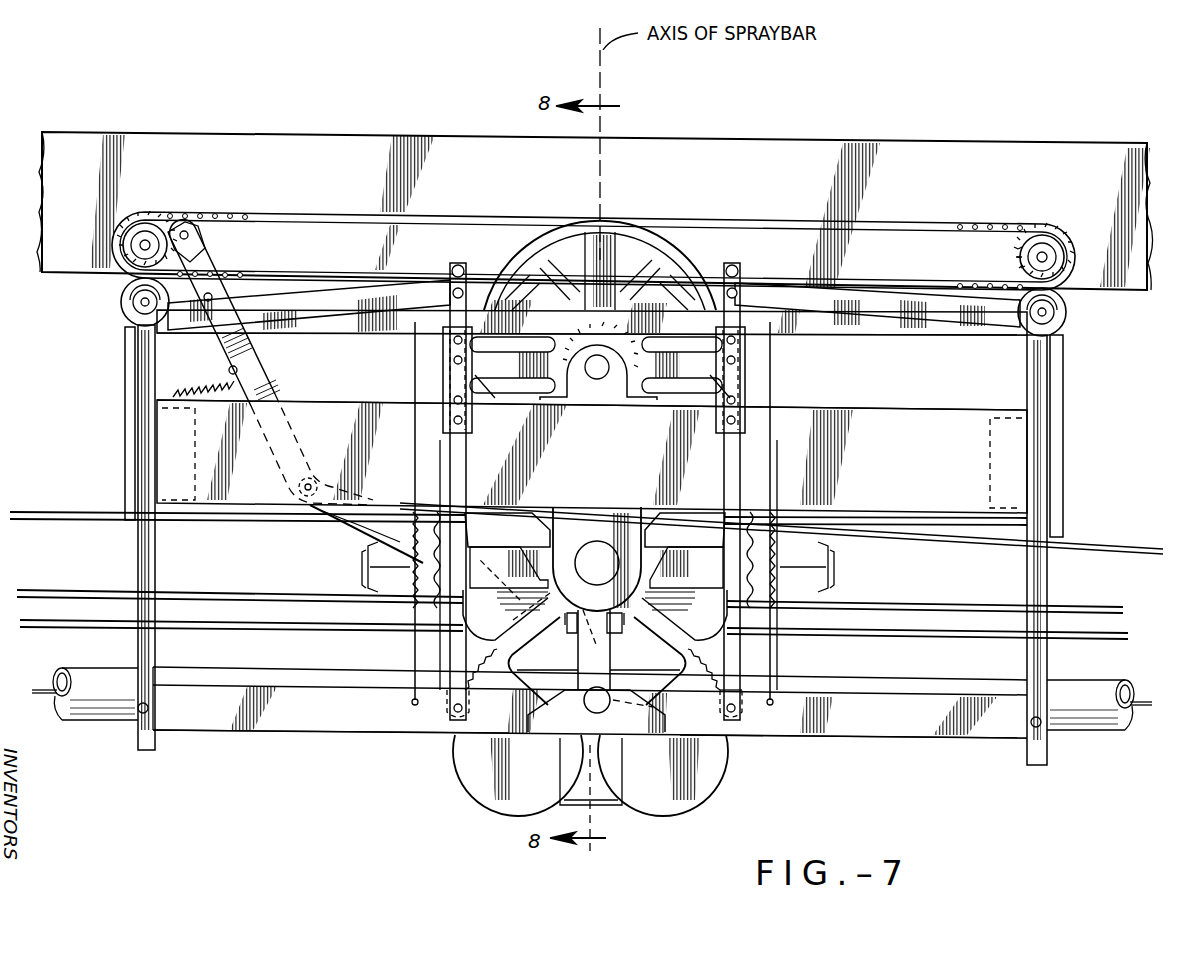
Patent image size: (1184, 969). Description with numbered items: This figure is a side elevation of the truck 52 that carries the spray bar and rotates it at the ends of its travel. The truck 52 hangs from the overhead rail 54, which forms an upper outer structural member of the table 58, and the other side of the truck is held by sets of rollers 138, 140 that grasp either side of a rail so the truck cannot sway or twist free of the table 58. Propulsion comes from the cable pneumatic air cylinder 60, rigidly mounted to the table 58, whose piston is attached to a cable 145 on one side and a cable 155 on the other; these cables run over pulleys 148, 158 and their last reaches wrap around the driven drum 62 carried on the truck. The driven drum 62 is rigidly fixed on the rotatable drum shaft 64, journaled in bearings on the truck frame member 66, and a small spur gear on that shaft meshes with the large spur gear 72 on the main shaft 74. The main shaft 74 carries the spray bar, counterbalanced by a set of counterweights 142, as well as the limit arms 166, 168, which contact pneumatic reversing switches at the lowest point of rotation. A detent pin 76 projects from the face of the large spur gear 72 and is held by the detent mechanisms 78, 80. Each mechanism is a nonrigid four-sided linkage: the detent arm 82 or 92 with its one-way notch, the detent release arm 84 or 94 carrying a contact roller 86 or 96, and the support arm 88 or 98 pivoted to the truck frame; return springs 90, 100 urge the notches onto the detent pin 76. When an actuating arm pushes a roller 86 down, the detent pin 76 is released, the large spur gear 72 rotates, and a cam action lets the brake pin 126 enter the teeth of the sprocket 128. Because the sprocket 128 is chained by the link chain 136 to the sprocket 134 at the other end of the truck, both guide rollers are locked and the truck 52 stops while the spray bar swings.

The truck 52 is at (1072, 378).
The overhead rail 54 is at (1140, 275).
The table 58 is at (985, 132).
The cable pneumatic air cylinder 60 is at (887, 684).
The driven drum 62 is at (685, 252).
The rotatable drum shaft 64 is at (612, 368).
The truck frame member 66 is at (865, 425).
The large spur gear 72 is at (780, 610).
The main shaft 74 is at (600, 548).
The detent pin 76 is at (606, 692).
The detent mechanism 78 is at (748, 736).
The detent mechanism 80 is at (436, 734).
The detent arm 82 is at (838, 732).
The detent release arm 84 is at (770, 648).
The contact roller 86 is at (738, 270).
The support arm 88 is at (882, 312).
The return spring 90 is at (778, 580).
The detent arm 92 is at (355, 722).
The detent release arm 94 is at (440, 645).
The contact roller 96 is at (455, 265).
The support arm 98 is at (357, 298).
The return spring 100 is at (372, 530).
The brake pin 126 is at (202, 242).
The sprocket 128 is at (200, 262).
The sprocket 134 is at (1018, 244).
The link chain 136 is at (200, 210).
The rollers 138 is at (133, 230).
The rollers 140 is at (121, 305).
The counterweights 142 is at (478, 780).
The cable 145 is at (1140, 725).
The pulley 148 is at (708, 580).
The cable 155 is at (48, 693).
The pulley 158 is at (476, 560).
The limit arm 166 is at (818, 566).
The limit arm 168 is at (390, 588).